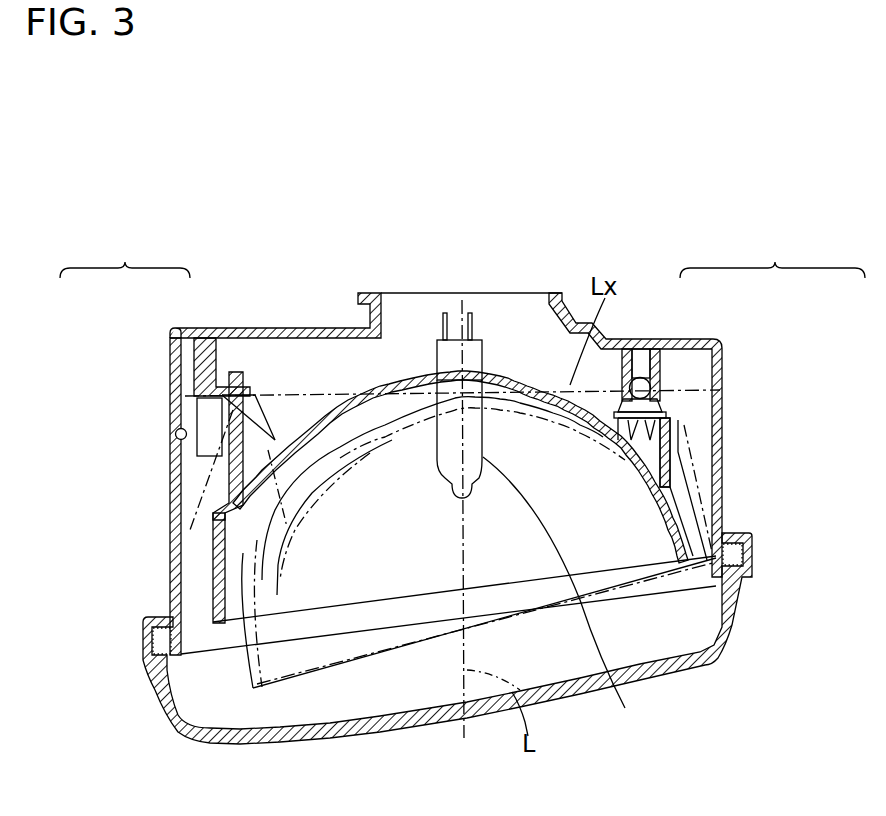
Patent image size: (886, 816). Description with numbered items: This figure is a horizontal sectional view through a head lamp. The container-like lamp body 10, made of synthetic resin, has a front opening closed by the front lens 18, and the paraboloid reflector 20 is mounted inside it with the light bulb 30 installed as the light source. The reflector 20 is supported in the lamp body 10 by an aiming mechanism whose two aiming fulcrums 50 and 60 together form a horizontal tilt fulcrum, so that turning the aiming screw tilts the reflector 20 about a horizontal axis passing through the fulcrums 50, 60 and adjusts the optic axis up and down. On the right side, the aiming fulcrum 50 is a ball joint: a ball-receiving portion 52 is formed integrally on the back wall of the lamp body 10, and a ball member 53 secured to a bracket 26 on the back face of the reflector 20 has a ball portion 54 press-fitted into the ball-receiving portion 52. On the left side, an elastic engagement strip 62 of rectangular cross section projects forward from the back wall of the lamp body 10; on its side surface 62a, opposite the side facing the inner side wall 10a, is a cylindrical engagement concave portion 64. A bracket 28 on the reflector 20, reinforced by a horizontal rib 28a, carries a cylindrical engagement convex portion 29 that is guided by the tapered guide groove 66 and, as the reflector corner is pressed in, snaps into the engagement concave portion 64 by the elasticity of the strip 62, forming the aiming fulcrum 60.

The lamp body 10 is at (360, 320).
The side wall 10a is at (175, 434).
The front lens 18 is at (363, 728).
The reflector 20 is at (502, 368).
The bracket 26 is at (680, 455).
The bracket 28 is at (253, 420).
The horizontal rib 28a is at (278, 430).
The engagement convex portion 29 is at (172, 388).
The light bulb 30 is at (448, 596).
The aiming fulcrum 50 is at (729, 398).
The ball-receiving portion 52 is at (662, 372).
The ball member 53 is at (677, 393).
The ball portion 54 is at (640, 415).
The aiming fulcrum 60 is at (178, 385).
The elastic engagement strip 62 is at (212, 466).
The side surface 62a is at (243, 367).
The engagement concave portion 64 is at (192, 372).
The tapered guide groove 66 is at (203, 443).